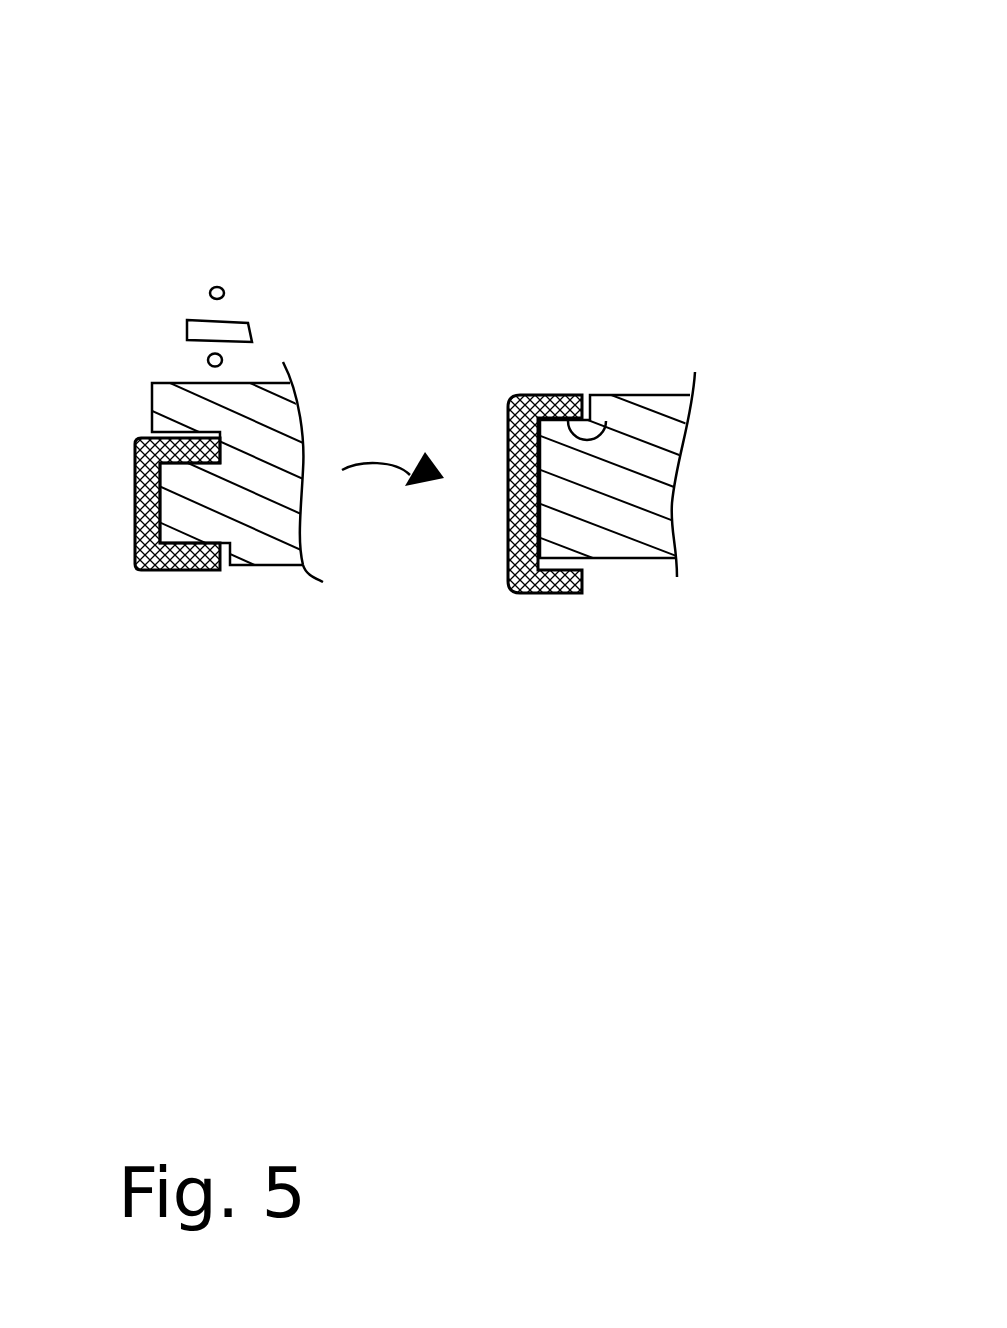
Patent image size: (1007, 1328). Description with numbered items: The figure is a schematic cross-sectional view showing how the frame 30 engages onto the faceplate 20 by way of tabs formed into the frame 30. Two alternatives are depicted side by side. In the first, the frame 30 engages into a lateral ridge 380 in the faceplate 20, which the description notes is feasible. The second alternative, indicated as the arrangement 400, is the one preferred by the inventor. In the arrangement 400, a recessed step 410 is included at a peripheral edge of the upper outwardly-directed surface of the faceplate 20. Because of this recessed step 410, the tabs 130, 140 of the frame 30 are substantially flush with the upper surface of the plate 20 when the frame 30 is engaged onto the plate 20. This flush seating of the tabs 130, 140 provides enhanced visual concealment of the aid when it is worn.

The arrangement 400 is at (730, 120).
The faceplate 20 is at (290, 418).
The frame 30 is at (128, 490).
The lateral ridge 380 is at (205, 422).
The recessed step 410 is at (604, 438).
The tab 130 is at (549, 395).
The tab 140 is at (545, 494).